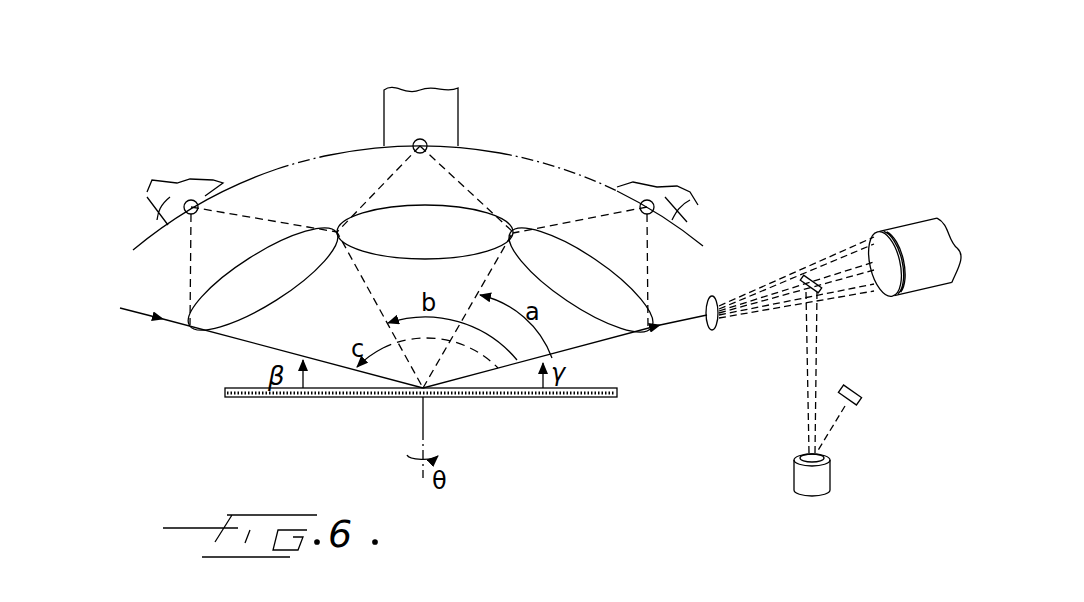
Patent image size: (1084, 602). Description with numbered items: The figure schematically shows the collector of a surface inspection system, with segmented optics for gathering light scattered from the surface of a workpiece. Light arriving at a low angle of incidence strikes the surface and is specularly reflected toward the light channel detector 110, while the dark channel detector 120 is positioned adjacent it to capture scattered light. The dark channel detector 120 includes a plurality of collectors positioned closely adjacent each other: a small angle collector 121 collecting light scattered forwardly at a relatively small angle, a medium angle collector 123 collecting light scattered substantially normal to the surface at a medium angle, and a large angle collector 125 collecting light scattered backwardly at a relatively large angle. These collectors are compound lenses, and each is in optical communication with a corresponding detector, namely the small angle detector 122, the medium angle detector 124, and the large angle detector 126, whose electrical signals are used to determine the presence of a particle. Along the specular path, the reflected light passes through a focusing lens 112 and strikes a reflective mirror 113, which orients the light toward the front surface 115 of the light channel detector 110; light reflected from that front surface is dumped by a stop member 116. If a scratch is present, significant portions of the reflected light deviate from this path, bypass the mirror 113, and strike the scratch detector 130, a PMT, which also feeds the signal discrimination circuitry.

The light channel detector 110 is at (820, 480).
The focusing lens 112 is at (713, 328).
The reflective mirror 113 is at (815, 277).
The front surface 115 is at (800, 455).
The stop member 116 is at (862, 385).
The dark channel detector 120 is at (532, 82).
The small angle collector 121 is at (603, 302).
The small angle detector 122 is at (674, 208).
The medium angle collector 123 is at (463, 225).
The medium angle detector 124 is at (445, 134).
The large angle collector 125 is at (268, 268).
The large angle detector 126 is at (161, 212).
The scratch detector 130 is at (912, 236).